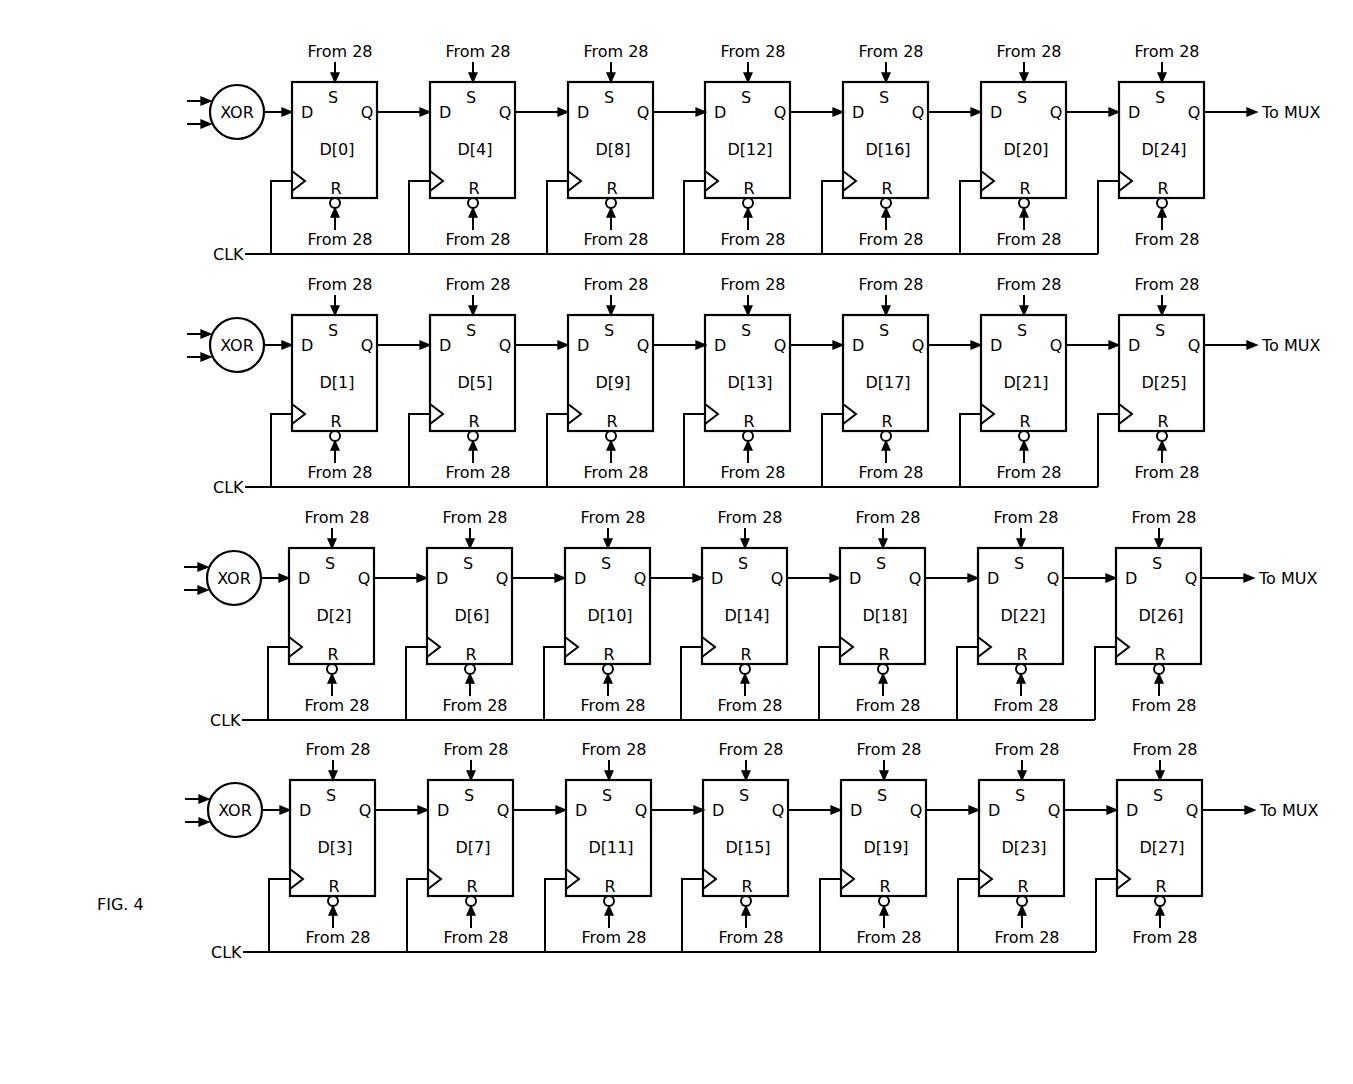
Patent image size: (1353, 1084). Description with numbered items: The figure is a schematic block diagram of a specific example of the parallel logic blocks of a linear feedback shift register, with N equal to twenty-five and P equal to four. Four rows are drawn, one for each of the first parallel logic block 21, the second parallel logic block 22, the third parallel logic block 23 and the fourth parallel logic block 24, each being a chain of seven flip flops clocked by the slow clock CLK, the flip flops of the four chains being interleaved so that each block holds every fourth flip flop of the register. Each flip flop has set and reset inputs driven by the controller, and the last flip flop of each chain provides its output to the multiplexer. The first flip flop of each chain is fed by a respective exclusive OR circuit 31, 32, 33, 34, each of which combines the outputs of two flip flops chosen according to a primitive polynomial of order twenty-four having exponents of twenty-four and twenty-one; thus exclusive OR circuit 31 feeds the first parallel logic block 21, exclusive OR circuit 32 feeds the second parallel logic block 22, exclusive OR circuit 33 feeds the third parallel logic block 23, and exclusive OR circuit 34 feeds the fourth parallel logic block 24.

The first parallel logic block 21 is at (132, 113).
The second parallel logic block 22 is at (132, 346).
The third parallel logic block 23 is at (129, 579).
The fourth parallel logic block 24 is at (130, 811).
The exclusive OR circuit 31 is at (232, 84).
The exclusive OR circuit 32 is at (232, 317).
The exclusive OR circuit 33 is at (229, 550).
The exclusive OR circuit 34 is at (230, 782).